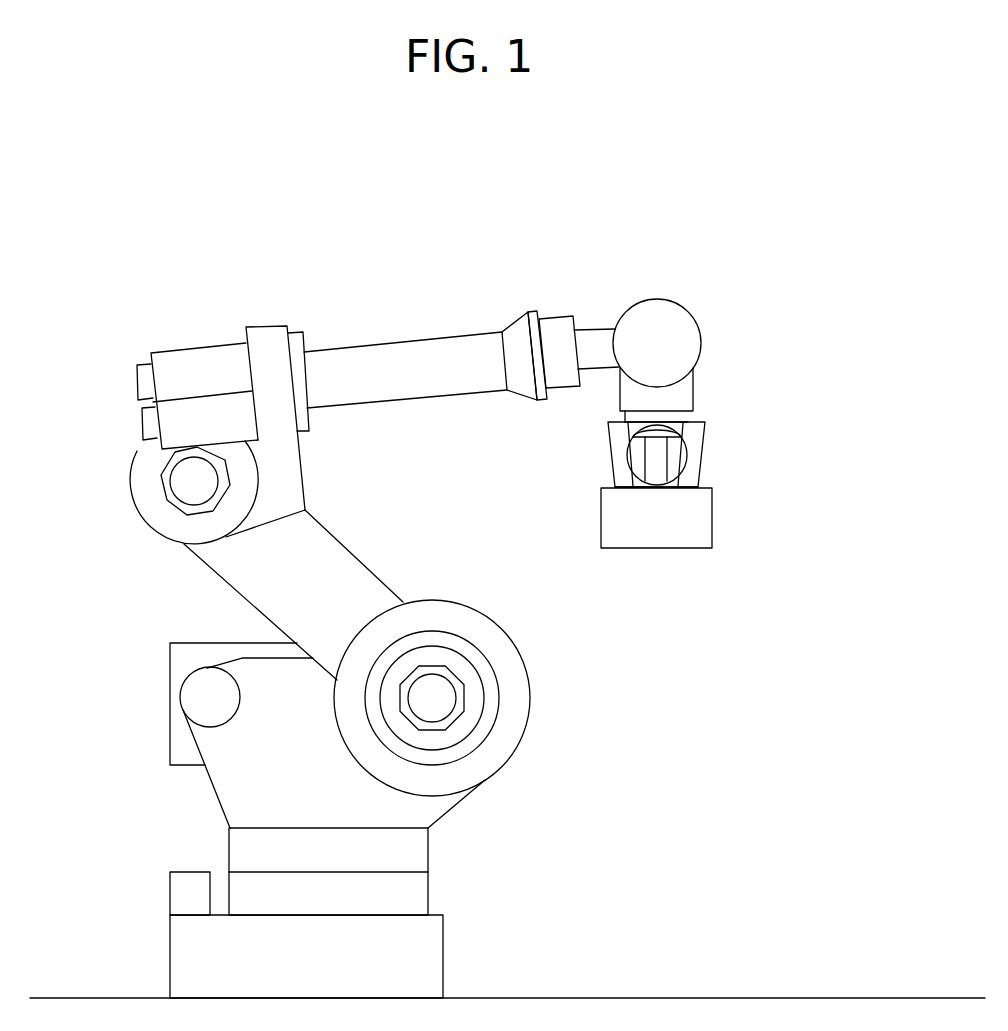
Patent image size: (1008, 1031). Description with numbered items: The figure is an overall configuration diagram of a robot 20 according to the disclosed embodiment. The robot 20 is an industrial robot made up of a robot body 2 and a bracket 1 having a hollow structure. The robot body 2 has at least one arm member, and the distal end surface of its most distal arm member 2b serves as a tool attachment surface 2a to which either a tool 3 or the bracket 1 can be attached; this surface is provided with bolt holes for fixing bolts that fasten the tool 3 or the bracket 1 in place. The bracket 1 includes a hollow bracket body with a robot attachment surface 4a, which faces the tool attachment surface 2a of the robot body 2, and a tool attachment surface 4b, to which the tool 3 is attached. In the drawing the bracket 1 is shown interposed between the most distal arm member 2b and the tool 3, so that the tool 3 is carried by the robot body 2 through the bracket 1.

The robot 20 is at (735, 205).
The robot body 2 is at (188, 324).
The tool attachment surface 2a is at (673, 428).
The most distal arm member 2b is at (692, 415).
The bracket 1 is at (703, 453).
The tool 3 is at (713, 513).
The robot attachment surface 4a is at (623, 419).
The tool attachment surface 4b is at (627, 488).